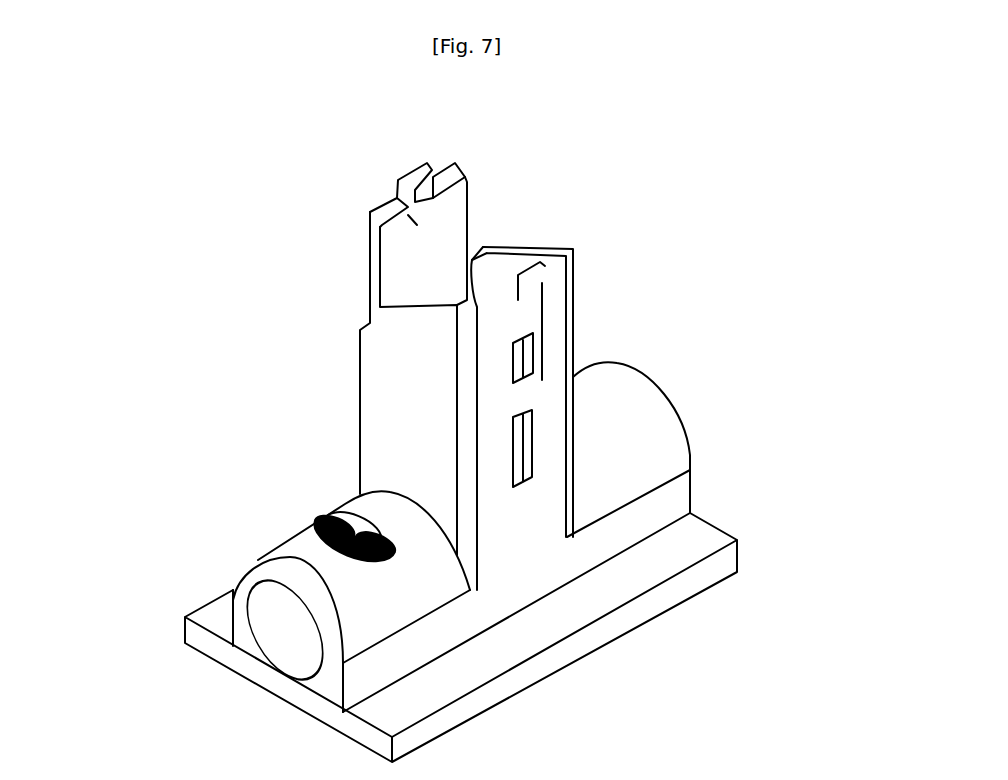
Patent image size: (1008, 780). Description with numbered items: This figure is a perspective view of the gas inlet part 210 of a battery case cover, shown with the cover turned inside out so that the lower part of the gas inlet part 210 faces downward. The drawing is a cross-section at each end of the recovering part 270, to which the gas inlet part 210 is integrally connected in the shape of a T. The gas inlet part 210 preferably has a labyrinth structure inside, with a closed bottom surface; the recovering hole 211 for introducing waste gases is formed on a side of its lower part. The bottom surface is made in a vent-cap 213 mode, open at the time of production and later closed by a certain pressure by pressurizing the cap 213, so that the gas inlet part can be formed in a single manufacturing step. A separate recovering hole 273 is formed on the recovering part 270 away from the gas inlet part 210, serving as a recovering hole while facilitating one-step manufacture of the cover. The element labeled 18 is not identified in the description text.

The hole 18 is at (290, 639).
The gas inlet part 210 is at (400, 378).
The recovering hole 211 is at (513, 452).
The vent-cap 213 is at (433, 240).
The recovering part 270 is at (247, 578).
The recovering hole 273 is at (350, 540).